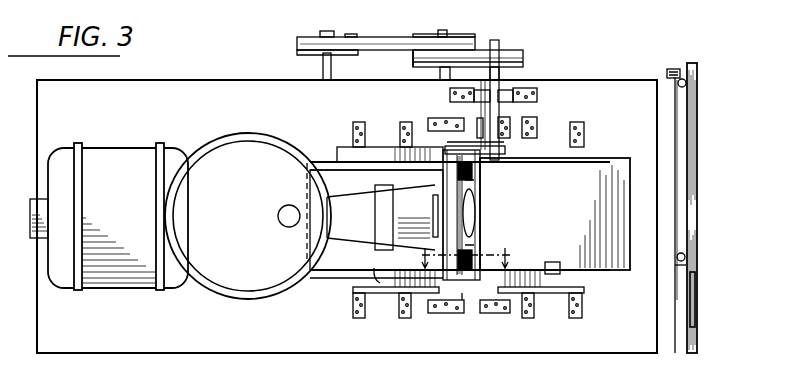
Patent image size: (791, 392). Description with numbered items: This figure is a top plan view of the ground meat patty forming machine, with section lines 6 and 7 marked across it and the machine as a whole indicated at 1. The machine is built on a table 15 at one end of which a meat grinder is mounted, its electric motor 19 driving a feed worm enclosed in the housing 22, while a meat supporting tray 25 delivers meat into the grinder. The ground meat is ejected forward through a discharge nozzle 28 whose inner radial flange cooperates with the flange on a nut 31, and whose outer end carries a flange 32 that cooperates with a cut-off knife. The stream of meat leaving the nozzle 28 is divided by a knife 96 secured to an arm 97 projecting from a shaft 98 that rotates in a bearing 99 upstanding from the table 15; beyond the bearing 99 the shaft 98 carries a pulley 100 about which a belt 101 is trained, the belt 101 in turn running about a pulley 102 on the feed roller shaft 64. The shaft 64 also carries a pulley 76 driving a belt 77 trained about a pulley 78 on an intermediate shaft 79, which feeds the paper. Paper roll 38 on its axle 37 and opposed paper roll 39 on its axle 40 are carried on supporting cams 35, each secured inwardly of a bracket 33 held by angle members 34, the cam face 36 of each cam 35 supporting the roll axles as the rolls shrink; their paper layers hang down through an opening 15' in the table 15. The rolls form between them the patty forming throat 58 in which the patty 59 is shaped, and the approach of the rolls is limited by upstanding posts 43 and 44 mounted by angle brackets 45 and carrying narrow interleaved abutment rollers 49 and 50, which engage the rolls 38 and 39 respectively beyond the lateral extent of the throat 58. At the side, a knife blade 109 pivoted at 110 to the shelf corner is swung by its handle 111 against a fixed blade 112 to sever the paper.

The instrument 1 is at (377, 138).
The section line 6 is at (465, 252).
The section line 7 is at (340, 155).
The table 15 is at (347, 227).
The opening 15' is at (248, 232).
The electric motor 19 is at (164, 280).
The housing 22 is at (300, 228).
The meat supporting tray 25 is at (248, 229).
The discharge nozzle 28 is at (402, 198).
The nut 31 is at (376, 220).
The flange 32 is at (434, 200).
The bracket 33 is at (378, 303).
The angle members 34 is at (576, 318).
The supporting cam 35 is at (358, 122).
The cam face 36 is at (523, 300).
The axle 37 is at (548, 262).
The paper roll 38 is at (610, 204).
The paper roll 39 is at (325, 285).
The central shaft or axle 40 is at (372, 268).
The upstanding post 43 is at (446, 118).
The upstanding post 44 is at (462, 313).
The angle brackets 45 is at (430, 120).
The rollers 49 is at (466, 242).
The rollers 50 is at (464, 280).
The patty forming throat 58 is at (478, 195).
The patty 59 is at (478, 215).
The shaft or axle 64 is at (444, 31).
The pulley 76 is at (470, 35).
The belt 77 is at (388, 40).
The pulley 78 is at (350, 34).
The intermediate shaft 79 is at (323, 31).
The knife 96 is at (474, 175).
The arm 97 is at (510, 160).
The shaft 98 is at (500, 118).
The bearing 99 is at (518, 90).
The pulley 100 is at (520, 50).
The belt 101 is at (523, 62).
The pulley 102 is at (413, 62).
The knife blade 109 is at (691, 202).
The pivot 110 is at (667, 70).
The handle 111 is at (695, 314).
The fixed blade 112 is at (680, 162).